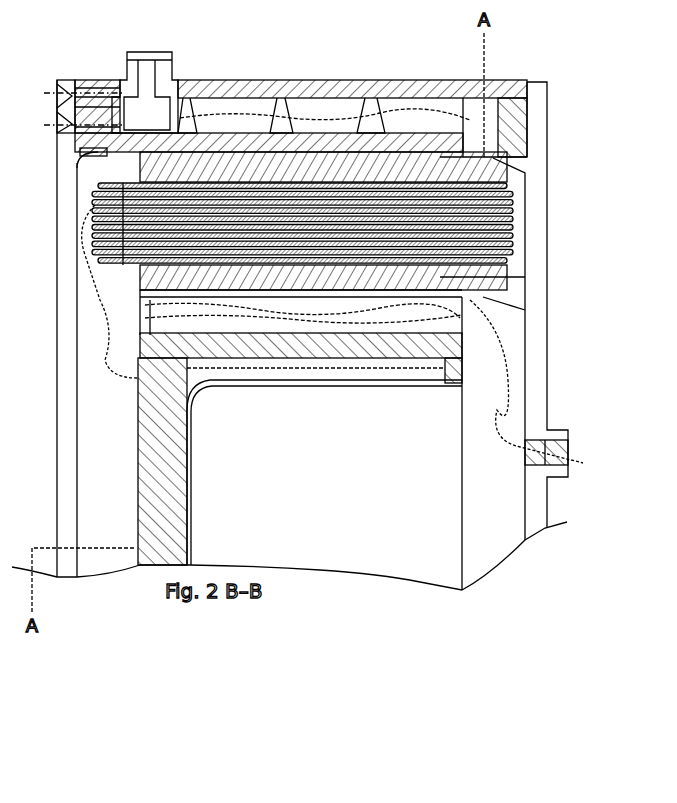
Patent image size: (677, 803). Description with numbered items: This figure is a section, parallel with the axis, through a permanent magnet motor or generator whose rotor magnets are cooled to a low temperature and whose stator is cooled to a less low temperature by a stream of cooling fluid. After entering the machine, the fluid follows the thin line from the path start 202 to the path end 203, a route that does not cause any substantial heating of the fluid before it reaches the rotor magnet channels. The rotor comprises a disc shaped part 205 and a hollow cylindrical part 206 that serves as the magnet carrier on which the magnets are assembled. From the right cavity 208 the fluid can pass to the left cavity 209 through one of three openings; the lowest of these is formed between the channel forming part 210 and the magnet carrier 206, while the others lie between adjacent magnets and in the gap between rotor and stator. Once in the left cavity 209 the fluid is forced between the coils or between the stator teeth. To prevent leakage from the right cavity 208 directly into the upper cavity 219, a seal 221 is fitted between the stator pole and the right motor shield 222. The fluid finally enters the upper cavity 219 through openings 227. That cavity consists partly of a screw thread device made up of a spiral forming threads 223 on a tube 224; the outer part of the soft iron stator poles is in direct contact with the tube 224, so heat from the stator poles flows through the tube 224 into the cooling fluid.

The cooling fluid path start 202 is at (548, 387).
The cooling fluid path end 203 is at (173, 118).
The disc shaped part 205 is at (147, 390).
The hollow cylindrical part 206 is at (340, 384).
The right cavity 208 is at (366, 443).
The left cavity 209 is at (88, 328).
The channel forming part 210 is at (330, 350).
The upper cavity 219 is at (270, 128).
The seal 221 is at (480, 289).
The right motor shield 222 is at (537, 200).
The spiral forming threads 223 is at (176, 128).
The tube 224 is at (350, 155).
The openings 227 is at (470, 150).